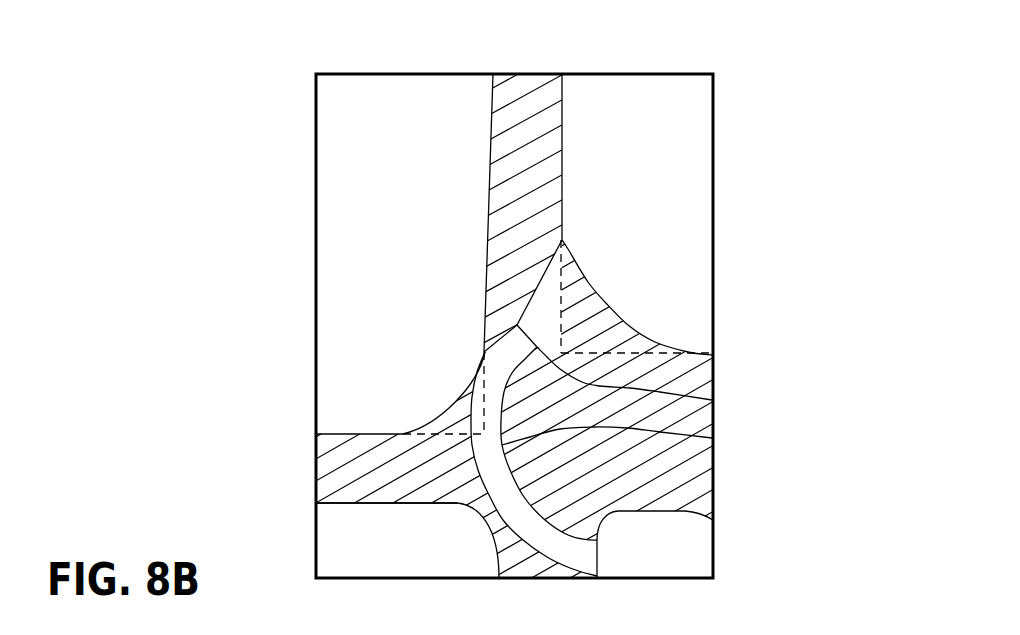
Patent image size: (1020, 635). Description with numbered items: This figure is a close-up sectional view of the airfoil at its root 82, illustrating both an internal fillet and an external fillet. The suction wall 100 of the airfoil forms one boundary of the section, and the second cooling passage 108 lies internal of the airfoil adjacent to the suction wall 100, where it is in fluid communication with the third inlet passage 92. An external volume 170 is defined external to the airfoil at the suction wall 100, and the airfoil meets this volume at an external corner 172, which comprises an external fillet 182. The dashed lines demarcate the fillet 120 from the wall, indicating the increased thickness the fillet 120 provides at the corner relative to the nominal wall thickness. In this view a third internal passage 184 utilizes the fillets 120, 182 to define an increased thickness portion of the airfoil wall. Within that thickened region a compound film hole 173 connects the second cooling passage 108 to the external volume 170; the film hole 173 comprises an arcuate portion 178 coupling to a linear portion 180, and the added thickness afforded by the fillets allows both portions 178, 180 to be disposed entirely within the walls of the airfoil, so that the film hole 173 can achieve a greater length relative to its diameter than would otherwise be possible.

The suction wall 100 is at (563, 113).
The second cooling passage 108 is at (360, 191).
The external volume 170 is at (584, 186).
The external corner 172 is at (563, 351).
The film hole 173 is at (530, 298).
The external fillet 182 is at (627, 324).
The linear portion 180 is at (713, 402).
The arcuate portion 178 is at (713, 437).
The fillet 120 is at (453, 398).
The root 82 is at (612, 481).
The third inlet passage 92 is at (406, 558).
The third internal passage 184 is at (634, 560).